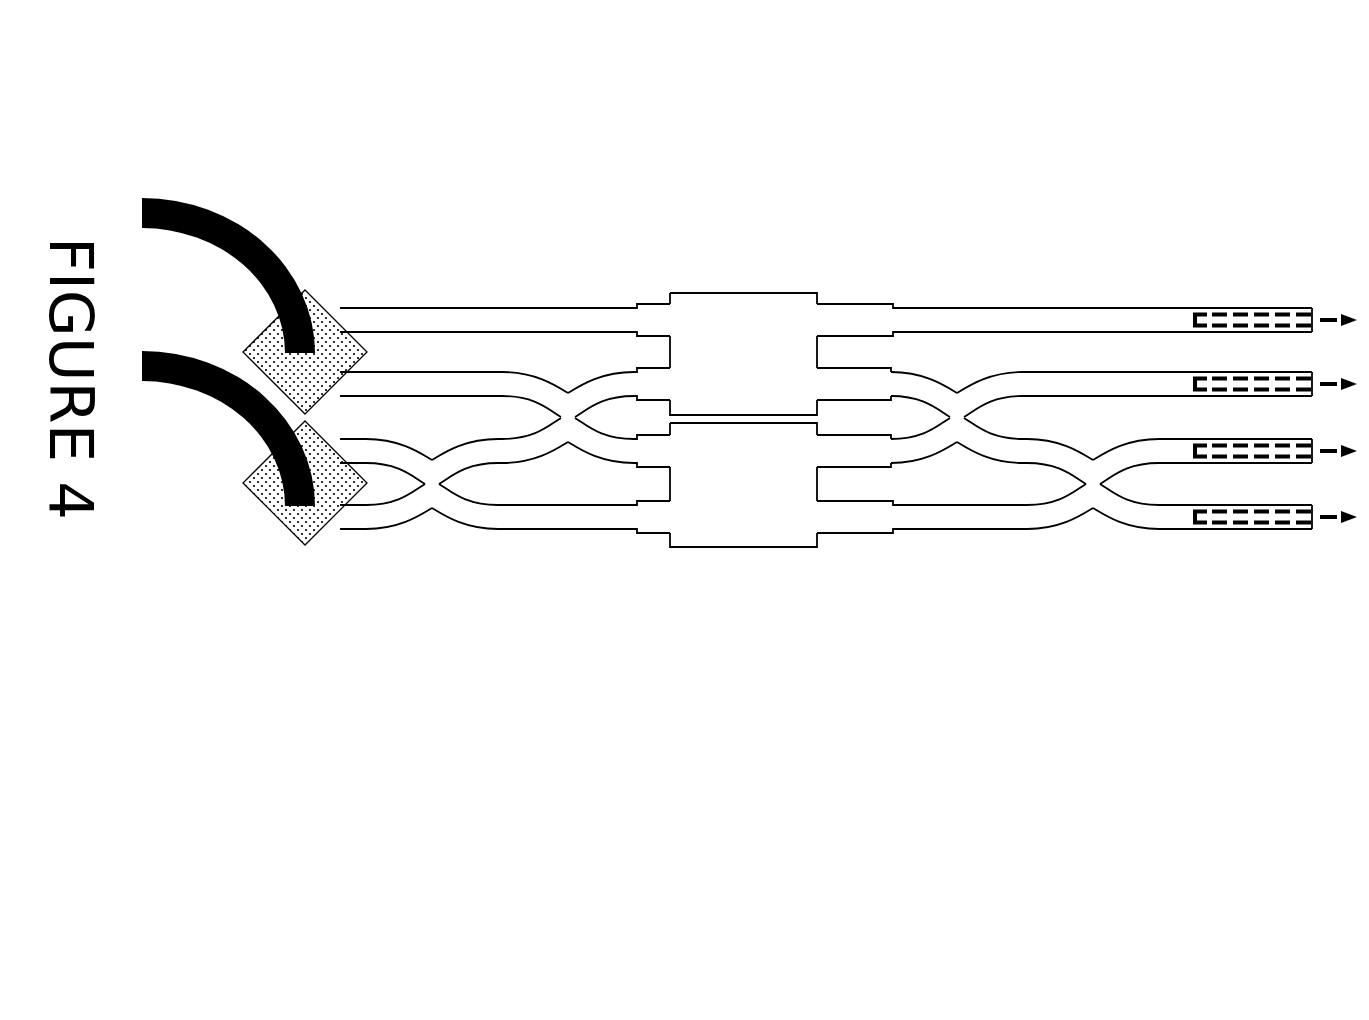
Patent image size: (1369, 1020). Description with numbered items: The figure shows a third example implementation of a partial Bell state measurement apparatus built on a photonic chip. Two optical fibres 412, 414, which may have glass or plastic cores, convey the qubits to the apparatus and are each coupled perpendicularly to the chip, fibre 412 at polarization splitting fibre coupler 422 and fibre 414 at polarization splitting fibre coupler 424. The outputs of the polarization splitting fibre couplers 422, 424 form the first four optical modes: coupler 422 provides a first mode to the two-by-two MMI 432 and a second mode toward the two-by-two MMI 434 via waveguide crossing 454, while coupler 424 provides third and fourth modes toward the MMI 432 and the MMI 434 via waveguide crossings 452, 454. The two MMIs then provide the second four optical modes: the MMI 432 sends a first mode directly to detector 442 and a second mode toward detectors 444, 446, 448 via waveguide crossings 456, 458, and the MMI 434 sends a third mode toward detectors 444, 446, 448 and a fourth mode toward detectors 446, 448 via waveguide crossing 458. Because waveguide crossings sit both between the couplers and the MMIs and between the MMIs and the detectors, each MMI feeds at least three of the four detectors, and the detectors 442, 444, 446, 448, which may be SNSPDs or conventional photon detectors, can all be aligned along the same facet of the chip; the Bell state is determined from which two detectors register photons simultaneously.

The optical fibre 412 is at (187, 208).
The optical fibre 414 is at (195, 392).
The polarization splitting fibre coupler 422 is at (327, 353).
The polarization splitting fibre coupler 424 is at (333, 483).
The 2×2 MMI 432 is at (770, 371).
The 2×2 MMI 434 is at (770, 502).
The detector 442 is at (1232, 310).
The detector 444 is at (1274, 373).
The detector 446 is at (1230, 460).
The detector 448 is at (1275, 520).
The waveguide crossing 452 is at (432, 487).
The waveguide crossing 454 is at (565, 418).
The waveguide crossing 456 is at (958, 417).
The waveguide crossing 458 is at (1092, 485).